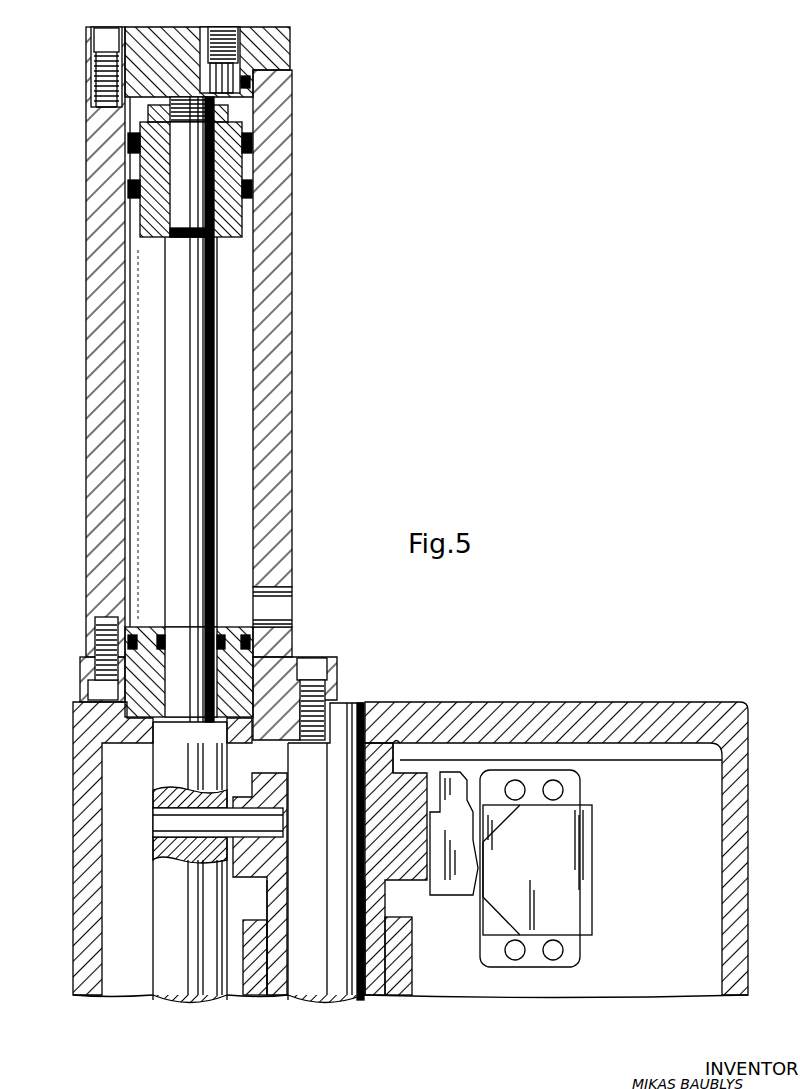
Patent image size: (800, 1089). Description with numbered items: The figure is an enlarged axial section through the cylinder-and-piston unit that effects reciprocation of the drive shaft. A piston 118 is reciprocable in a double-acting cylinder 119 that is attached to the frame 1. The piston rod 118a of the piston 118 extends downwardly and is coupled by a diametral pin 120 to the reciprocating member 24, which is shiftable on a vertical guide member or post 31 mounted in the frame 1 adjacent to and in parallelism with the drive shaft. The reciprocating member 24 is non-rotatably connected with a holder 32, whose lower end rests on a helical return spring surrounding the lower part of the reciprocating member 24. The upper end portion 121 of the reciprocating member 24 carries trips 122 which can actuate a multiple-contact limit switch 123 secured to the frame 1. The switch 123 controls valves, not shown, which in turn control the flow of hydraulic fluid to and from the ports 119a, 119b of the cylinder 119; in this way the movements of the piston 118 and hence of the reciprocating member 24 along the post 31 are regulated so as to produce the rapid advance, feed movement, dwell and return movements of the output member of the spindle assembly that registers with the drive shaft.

The frame 1 is at (572, 720).
The reciprocating member 24 is at (252, 905).
The vertical guide member or post 31 is at (316, 944).
The holder 32 is at (255, 990).
The piston 118 is at (150, 215).
The piston rod 118a is at (215, 445).
The double-acting cylinder 119 is at (275, 330).
The port 119a is at (240, 48).
The port 119b is at (278, 600).
The diametral pin 120 is at (158, 823).
The upper end portion 121 is at (400, 790).
The trips 122 is at (455, 772).
The multiple-contact limit switch 123 is at (568, 920).